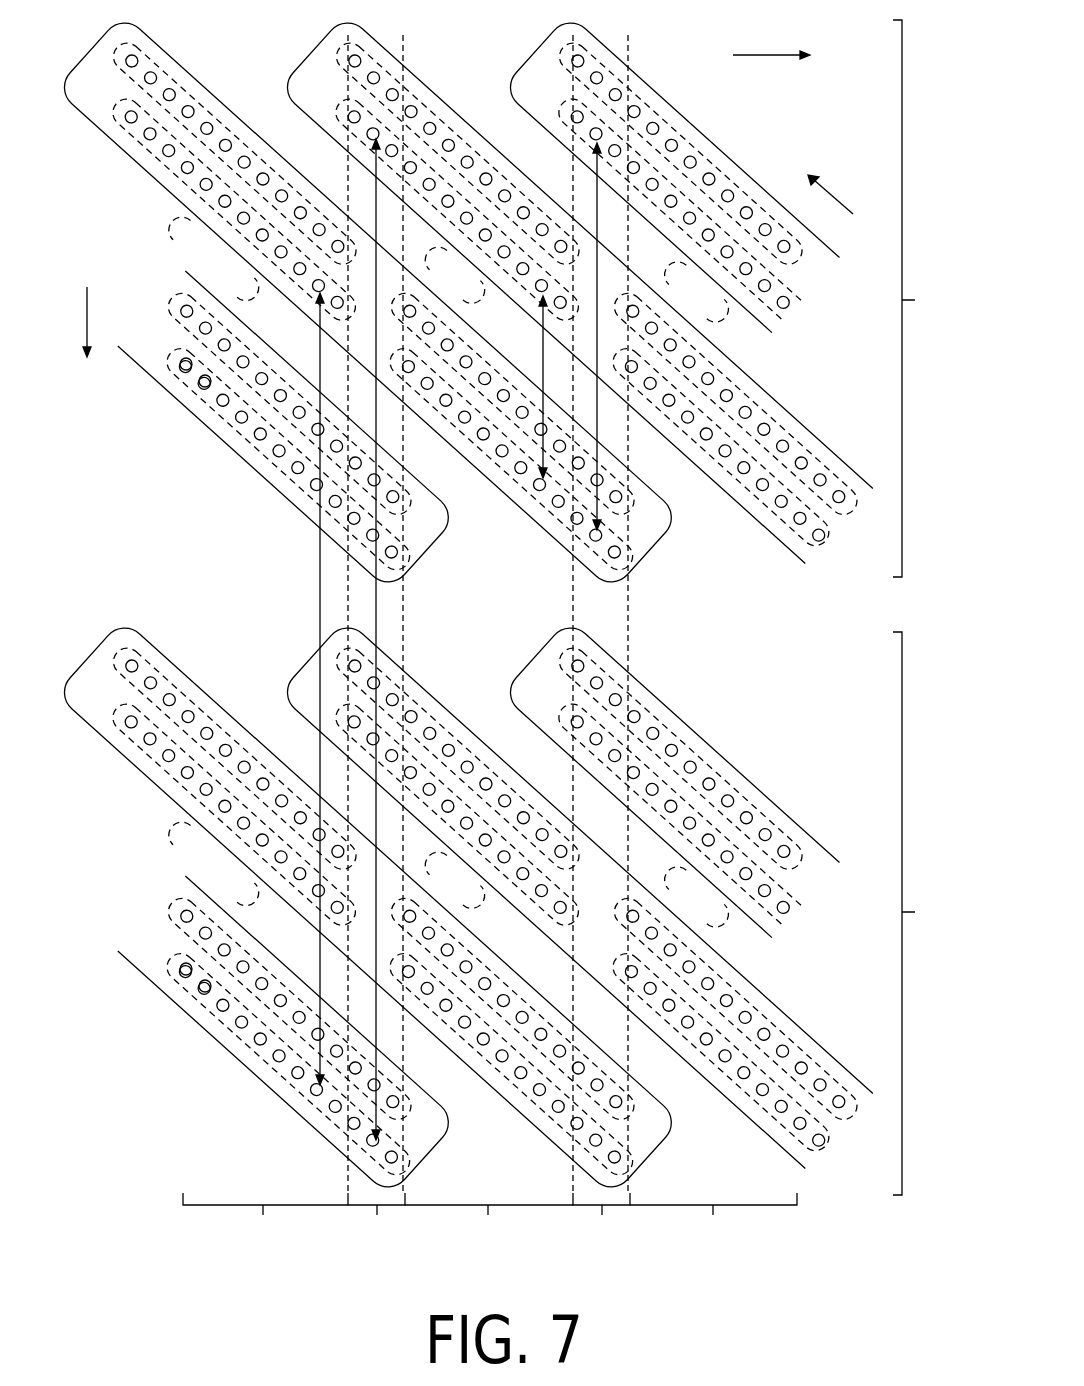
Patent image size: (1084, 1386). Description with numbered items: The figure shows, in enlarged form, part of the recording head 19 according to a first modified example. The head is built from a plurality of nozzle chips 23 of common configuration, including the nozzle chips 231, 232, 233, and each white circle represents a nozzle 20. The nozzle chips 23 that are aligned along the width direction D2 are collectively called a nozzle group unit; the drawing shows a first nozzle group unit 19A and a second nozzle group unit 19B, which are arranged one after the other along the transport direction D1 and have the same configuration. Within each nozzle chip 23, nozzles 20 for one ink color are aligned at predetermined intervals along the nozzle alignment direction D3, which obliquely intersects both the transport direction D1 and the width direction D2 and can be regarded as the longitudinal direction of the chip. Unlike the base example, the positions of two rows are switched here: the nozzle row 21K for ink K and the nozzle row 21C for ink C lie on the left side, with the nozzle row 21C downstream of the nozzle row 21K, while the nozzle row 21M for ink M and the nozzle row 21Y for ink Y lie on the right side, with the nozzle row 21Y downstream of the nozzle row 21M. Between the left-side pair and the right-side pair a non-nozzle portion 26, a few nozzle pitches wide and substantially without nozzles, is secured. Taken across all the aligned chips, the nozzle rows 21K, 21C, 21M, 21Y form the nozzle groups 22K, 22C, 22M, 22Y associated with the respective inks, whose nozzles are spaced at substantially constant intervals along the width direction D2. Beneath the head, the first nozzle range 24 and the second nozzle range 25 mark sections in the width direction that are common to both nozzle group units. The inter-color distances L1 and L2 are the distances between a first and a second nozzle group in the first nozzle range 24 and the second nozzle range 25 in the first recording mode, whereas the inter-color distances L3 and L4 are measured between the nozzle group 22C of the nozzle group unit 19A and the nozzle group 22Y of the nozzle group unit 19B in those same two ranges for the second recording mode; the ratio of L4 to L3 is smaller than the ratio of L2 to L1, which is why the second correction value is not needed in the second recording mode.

The recording head 19 is at (920, 556).
The nozzle group unit 19A is at (926, 298).
The nozzle group unit 19B is at (926, 913).
The nozzle 20 is at (181, 369).
The nozzle row 21K is at (186, 70).
The nozzle row 21C is at (424, 576).
The nozzle row 21M is at (470, 626).
The nozzle row 21Y is at (266, 500).
The nozzle group 22K is at (720, 79).
The nozzle group 22C is at (128, 254).
The nozzle group 22M is at (791, 350).
The nozzle group 22Y is at (246, 520).
The nozzle chip 23 is at (94, 659).
The nozzle chip 231 is at (94, 54).
The nozzle chip 232 is at (317, 54).
The nozzle chip 233 is at (541, 54).
The first nozzle range 24 is at (490, 1220).
The second nozzle range 25 is at (489, 1220).
The non-nozzle portion 26 is at (364, 256).
The inter-color distance L1 is at (533, 387).
The inter-color distance L2 is at (587, 336).
The inter-color distance L3 is at (311, 689).
The inter-color distance L4 is at (366, 639).
The transport direction D1 is at (71, 322).
The width direction D2 is at (771, 45).
The nozzle alignment direction D3 is at (834, 194).